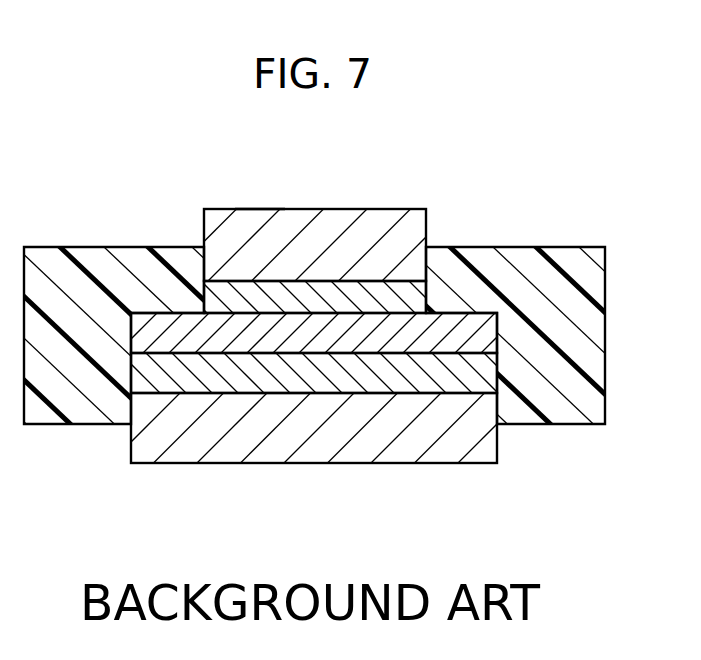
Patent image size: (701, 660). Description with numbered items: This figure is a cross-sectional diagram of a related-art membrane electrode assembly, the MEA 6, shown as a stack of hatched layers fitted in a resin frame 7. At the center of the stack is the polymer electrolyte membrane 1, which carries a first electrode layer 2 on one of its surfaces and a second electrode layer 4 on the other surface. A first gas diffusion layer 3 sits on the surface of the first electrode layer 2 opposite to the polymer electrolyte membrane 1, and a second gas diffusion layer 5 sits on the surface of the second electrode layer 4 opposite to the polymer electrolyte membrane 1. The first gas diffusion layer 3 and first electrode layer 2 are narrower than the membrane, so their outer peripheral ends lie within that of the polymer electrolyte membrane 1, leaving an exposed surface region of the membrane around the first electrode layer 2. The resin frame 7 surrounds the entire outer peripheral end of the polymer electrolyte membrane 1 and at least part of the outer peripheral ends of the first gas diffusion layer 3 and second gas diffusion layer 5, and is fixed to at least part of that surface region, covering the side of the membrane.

The polymer electrolyte membrane 1 is at (473, 336).
The first electrode layer 2 is at (413, 298).
The first gas diffusion layer 3 is at (387, 218).
The second electrode layer 4 is at (473, 378).
The second gas diffusion layer 5 is at (430, 452).
The MEA 6 is at (258, 194).
The resin frame 7 is at (557, 258).